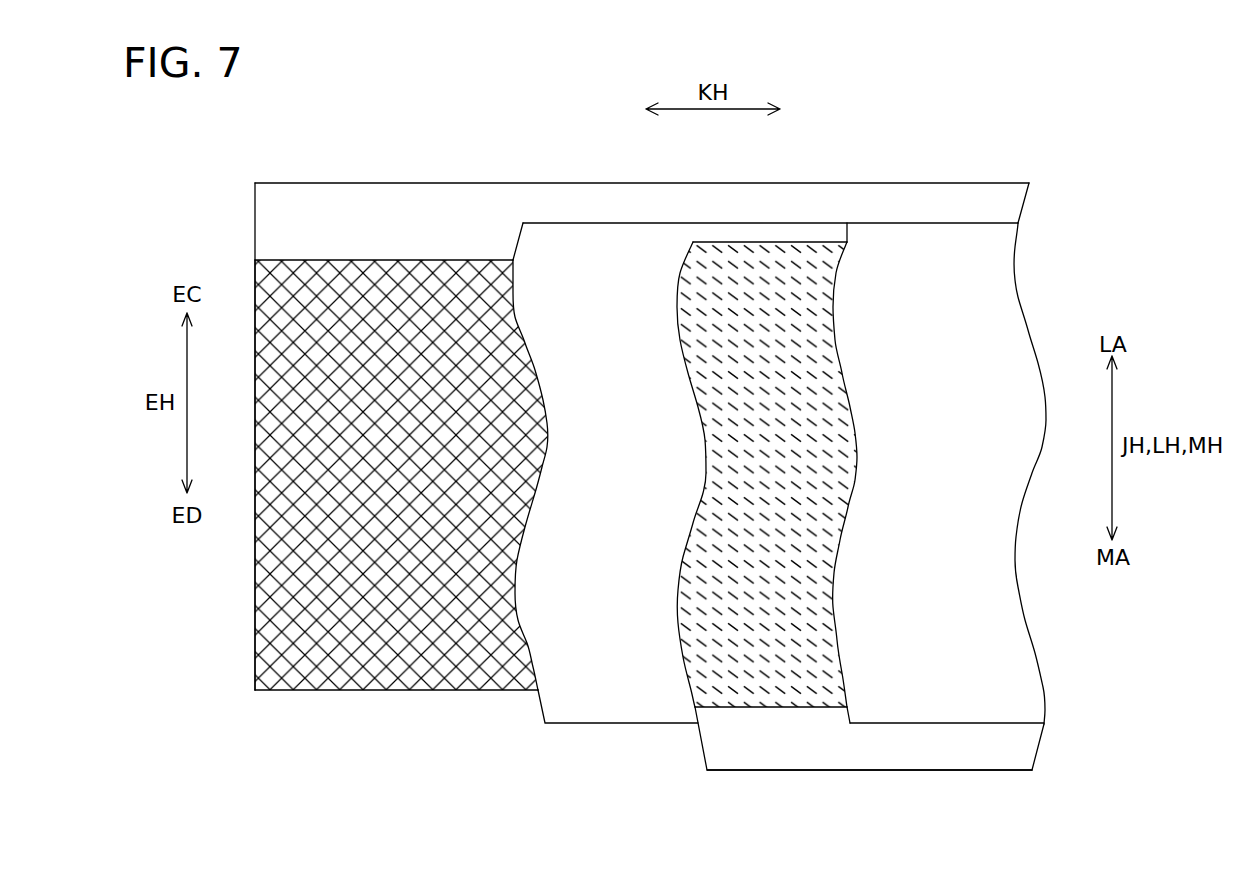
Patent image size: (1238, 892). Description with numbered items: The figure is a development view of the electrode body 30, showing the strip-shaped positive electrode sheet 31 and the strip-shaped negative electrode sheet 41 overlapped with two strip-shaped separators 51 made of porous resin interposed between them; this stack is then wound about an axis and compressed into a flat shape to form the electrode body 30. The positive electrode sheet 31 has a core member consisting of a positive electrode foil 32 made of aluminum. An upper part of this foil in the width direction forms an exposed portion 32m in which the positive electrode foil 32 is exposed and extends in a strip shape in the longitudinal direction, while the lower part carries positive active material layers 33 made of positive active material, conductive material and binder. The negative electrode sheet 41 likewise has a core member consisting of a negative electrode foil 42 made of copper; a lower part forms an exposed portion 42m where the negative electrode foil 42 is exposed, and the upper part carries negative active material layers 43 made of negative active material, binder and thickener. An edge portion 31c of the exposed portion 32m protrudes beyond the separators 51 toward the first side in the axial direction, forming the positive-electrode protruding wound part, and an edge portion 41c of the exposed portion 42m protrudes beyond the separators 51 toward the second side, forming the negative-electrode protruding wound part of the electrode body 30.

The electrode body 30 is at (1035, 158).
The positive electrode sheet 31 is at (484, 212).
The edge portion 31c is at (835, 207).
The positive electrode foil 32 is at (374, 212).
The exposed portion 32m is at (298, 212).
The positive active material layer 33 is at (392, 630).
The negative electrode sheet 41 is at (767, 268).
The edge portion 41c is at (843, 745).
The negative electrode foil 42 is at (930, 752).
The exposed portion 42m is at (1003, 750).
The negative active material layer 43 is at (733, 685).
The separator 51 is at (590, 250).